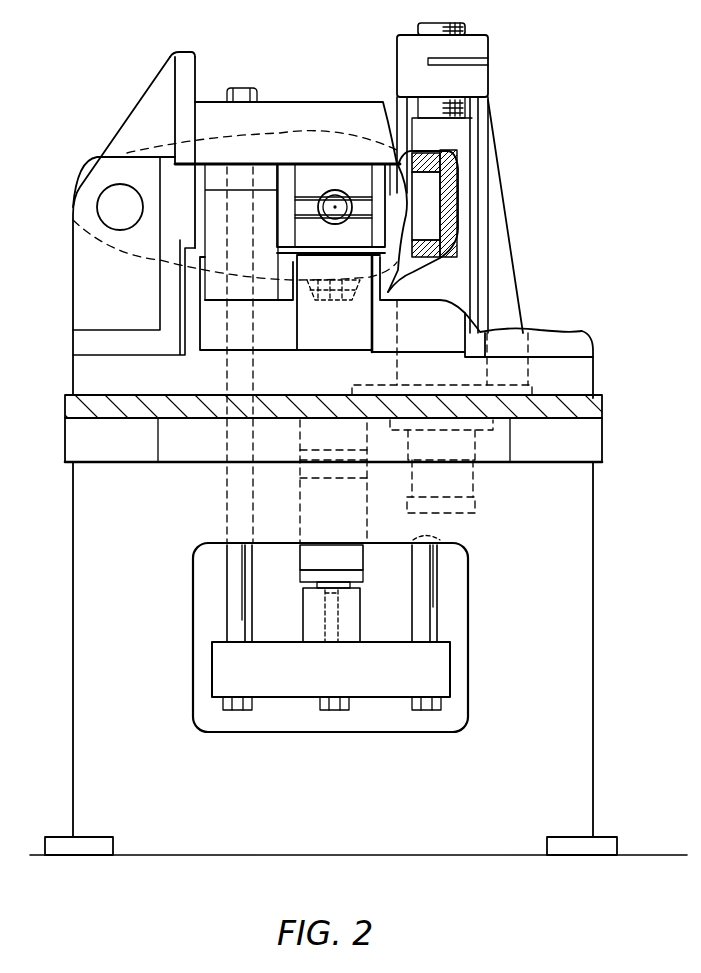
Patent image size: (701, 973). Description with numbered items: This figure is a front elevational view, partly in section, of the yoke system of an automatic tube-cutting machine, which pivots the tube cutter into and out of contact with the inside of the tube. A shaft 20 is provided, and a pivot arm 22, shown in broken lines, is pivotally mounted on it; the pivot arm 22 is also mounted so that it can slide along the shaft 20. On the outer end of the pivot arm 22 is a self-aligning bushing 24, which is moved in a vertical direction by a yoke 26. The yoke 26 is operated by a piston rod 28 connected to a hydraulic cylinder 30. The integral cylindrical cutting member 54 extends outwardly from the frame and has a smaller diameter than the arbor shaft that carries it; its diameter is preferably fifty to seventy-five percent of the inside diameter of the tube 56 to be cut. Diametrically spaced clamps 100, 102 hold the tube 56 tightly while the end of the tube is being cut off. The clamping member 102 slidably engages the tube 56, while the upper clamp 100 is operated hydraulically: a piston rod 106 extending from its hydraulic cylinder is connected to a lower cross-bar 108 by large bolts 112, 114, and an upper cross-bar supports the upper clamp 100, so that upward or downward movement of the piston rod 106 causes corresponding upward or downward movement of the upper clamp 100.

The shaft 20 is at (113, 213).
The pivot arm 22 is at (280, 133).
The self-aligning bushing 24 is at (423, 197).
The yoke 26 is at (413, 267).
The piston rod 28 is at (457, 277).
The hydraulic cylinder 30 is at (470, 483).
The cutting member 54 is at (325, 210).
The tube 56 is at (355, 198).
The clamp 100 is at (352, 177).
The clamping member 102 is at (360, 232).
The piston rod 106 is at (350, 627).
The lower cross-bar 108 is at (220, 685).
The bolt 112 is at (235, 608).
The bolt 114 is at (430, 617).